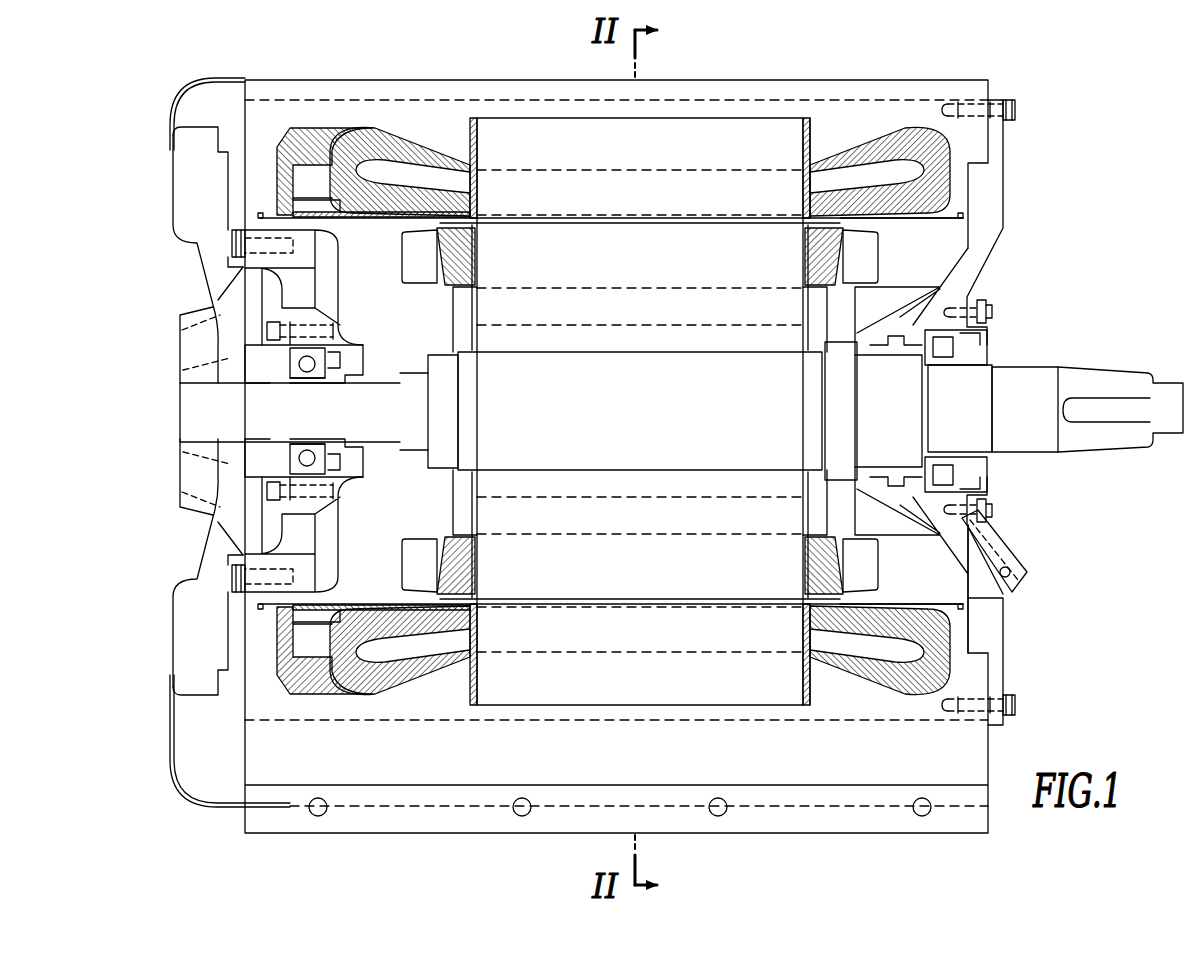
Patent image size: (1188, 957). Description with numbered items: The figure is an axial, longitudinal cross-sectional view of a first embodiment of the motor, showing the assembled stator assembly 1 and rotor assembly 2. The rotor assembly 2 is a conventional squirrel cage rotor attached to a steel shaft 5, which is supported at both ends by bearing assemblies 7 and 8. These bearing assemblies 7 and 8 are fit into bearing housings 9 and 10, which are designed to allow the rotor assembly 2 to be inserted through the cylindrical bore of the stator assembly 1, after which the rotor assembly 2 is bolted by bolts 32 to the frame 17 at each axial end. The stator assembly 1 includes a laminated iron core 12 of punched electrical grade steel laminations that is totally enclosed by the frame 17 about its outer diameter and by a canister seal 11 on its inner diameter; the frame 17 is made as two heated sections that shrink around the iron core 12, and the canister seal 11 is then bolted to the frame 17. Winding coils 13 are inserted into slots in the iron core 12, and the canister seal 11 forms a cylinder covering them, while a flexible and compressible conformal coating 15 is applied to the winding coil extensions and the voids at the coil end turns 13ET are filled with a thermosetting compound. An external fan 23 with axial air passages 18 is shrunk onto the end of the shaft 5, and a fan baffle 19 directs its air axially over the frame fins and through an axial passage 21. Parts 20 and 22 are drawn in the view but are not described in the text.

The stator assembly 1 is at (444, 110).
The rotor assembly 2 is at (707, 575).
The steel shaft 5 is at (390, 427).
The bearing assembly 7 is at (292, 380).
The bearing assembly 8 is at (950, 360).
The bearing housing 9 is at (318, 318).
The bearing housing 10 is at (1005, 195).
The canister seal 11 is at (928, 222).
The laminated iron core 12 is at (507, 690).
The winding coils 13 is at (672, 195).
The coil end turns 13ET is at (362, 150).
The conformal coating 15 is at (887, 132).
The frame 17 is at (823, 125).
The axial air passages 18 is at (180, 352).
The fan baffle 19 is at (188, 92).
The bearing bracket 20 is at (296, 283).
The axial passage 21 is at (574, 270).
The end shield flange 22 is at (1000, 262).
The external fan 23 is at (183, 167).
The bolts 32 is at (238, 228).